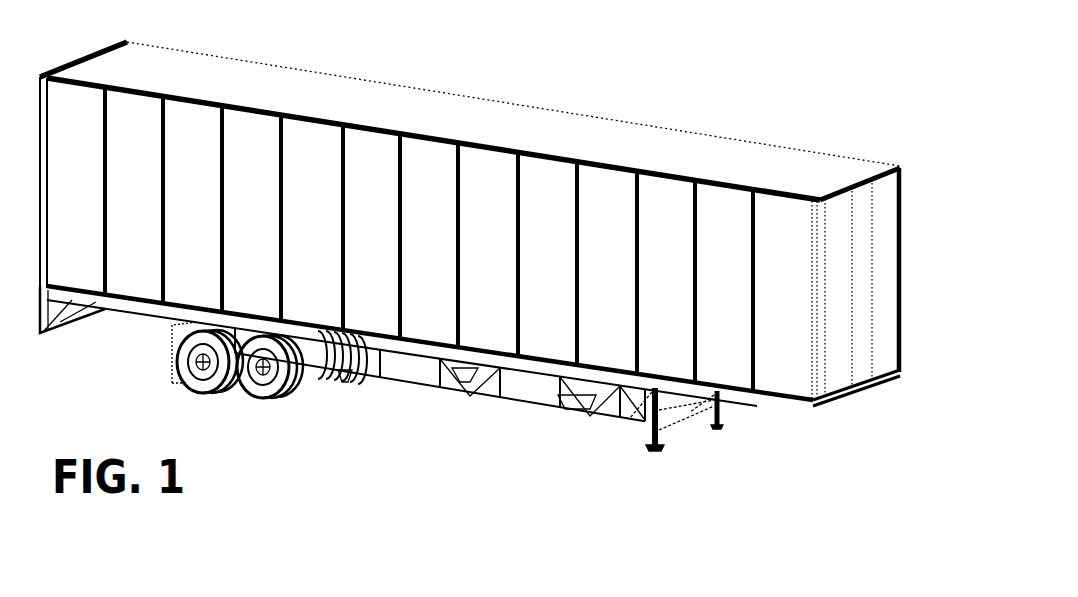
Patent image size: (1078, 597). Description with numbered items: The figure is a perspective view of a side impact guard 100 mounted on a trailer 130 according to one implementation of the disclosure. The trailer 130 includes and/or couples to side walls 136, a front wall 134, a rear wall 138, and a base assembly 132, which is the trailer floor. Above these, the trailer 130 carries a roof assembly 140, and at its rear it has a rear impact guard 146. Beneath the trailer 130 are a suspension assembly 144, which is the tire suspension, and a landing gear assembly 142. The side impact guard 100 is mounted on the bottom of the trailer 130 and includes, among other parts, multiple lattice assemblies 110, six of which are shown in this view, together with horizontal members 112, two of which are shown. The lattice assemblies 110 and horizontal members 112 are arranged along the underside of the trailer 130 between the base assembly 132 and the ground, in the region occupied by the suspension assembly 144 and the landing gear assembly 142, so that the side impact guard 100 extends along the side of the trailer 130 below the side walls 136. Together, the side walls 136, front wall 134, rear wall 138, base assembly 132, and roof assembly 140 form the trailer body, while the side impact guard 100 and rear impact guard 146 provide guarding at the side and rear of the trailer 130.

The side impact guard 100 is at (497, 257).
The lattice assemblies 110 is at (372, 362).
The horizontal members 112 is at (398, 361).
The trailer 130 is at (497, 231).
The base assembly 132 is at (863, 396).
The front wall 134 is at (890, 220).
The side walls 136 is at (450, 252).
The rear wall 138 is at (92, 50).
The roof assembly 140 is at (262, 85).
The landing gear assembly 142 is at (657, 457).
The suspension assembly 144 is at (233, 399).
The rear impact guard 146 is at (73, 332).